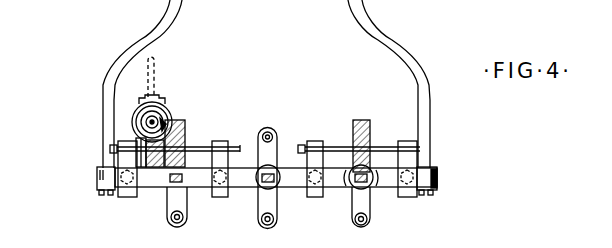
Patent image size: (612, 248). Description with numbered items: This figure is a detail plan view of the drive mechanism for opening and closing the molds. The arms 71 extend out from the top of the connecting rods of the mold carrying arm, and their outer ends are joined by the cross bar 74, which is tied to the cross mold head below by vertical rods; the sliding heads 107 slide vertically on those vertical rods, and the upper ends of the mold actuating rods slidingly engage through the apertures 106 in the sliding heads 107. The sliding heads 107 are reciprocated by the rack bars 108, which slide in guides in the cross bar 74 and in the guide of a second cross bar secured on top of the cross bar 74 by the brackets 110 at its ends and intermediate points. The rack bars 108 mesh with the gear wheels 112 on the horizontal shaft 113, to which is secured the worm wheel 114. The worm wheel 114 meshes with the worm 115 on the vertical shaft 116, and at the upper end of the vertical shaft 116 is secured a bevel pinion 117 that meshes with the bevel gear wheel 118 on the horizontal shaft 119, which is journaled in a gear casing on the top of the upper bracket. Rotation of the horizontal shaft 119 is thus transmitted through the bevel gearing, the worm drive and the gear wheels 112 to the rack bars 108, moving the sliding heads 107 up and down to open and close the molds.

The arms 71 is at (166, 22).
The cross bar 74 is at (292, 168).
The apertures 106 is at (374, 221).
The sliding heads 107 is at (278, 209).
The rack bars 108 is at (170, 184).
The brackets 110 is at (221, 149).
The gear wheels 112 is at (184, 128).
The horizontal shaft 113 is at (197, 152).
The worm wheel 114 is at (138, 141).
The worm 115 is at (168, 118).
The vertical shaft 116 is at (160, 120).
The bevel pinion 117 is at (130, 112).
The bevel gear wheel 118 is at (158, 97).
The horizontal shaft 119 is at (148, 71).